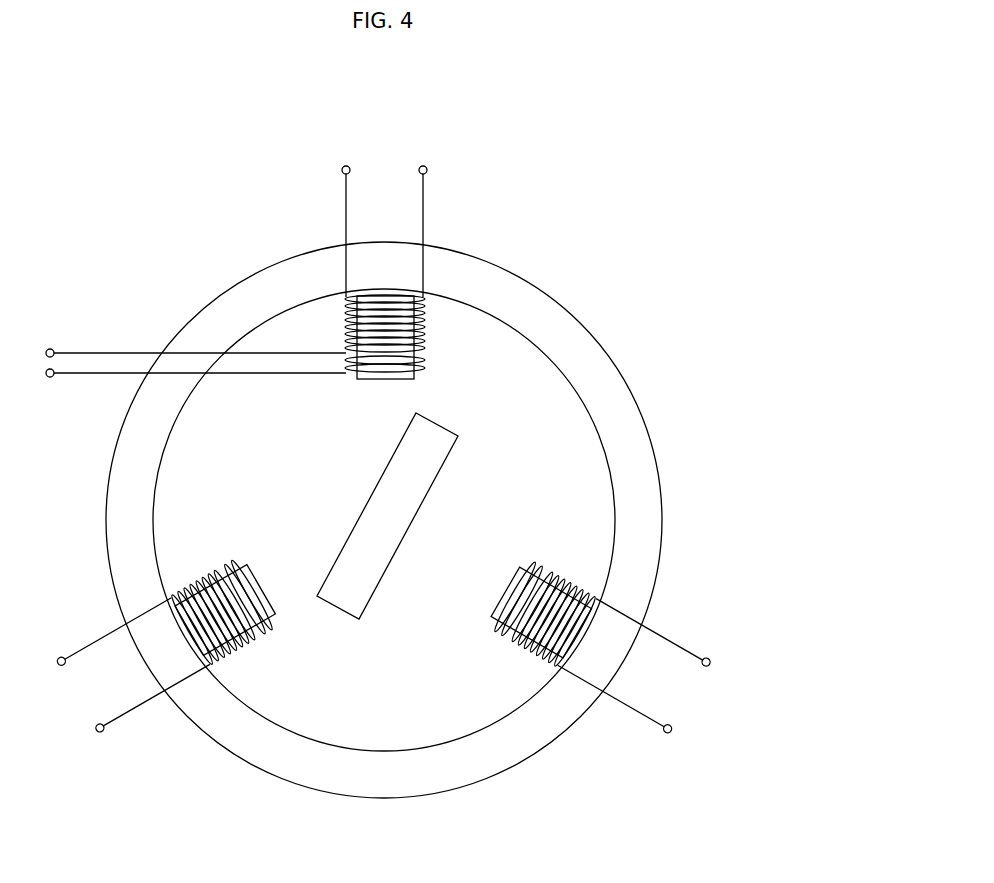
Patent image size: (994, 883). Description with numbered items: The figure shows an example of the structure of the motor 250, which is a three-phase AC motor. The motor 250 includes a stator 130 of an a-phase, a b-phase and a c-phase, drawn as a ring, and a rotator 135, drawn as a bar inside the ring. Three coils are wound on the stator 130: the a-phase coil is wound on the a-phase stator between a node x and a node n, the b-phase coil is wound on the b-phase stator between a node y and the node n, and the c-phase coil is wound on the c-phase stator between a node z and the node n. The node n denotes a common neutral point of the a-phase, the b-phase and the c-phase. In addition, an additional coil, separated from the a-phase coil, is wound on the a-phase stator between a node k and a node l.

The motor 250 is at (398, 469).
The stator 130 is at (638, 505).
The rotator 135 is at (369, 551).